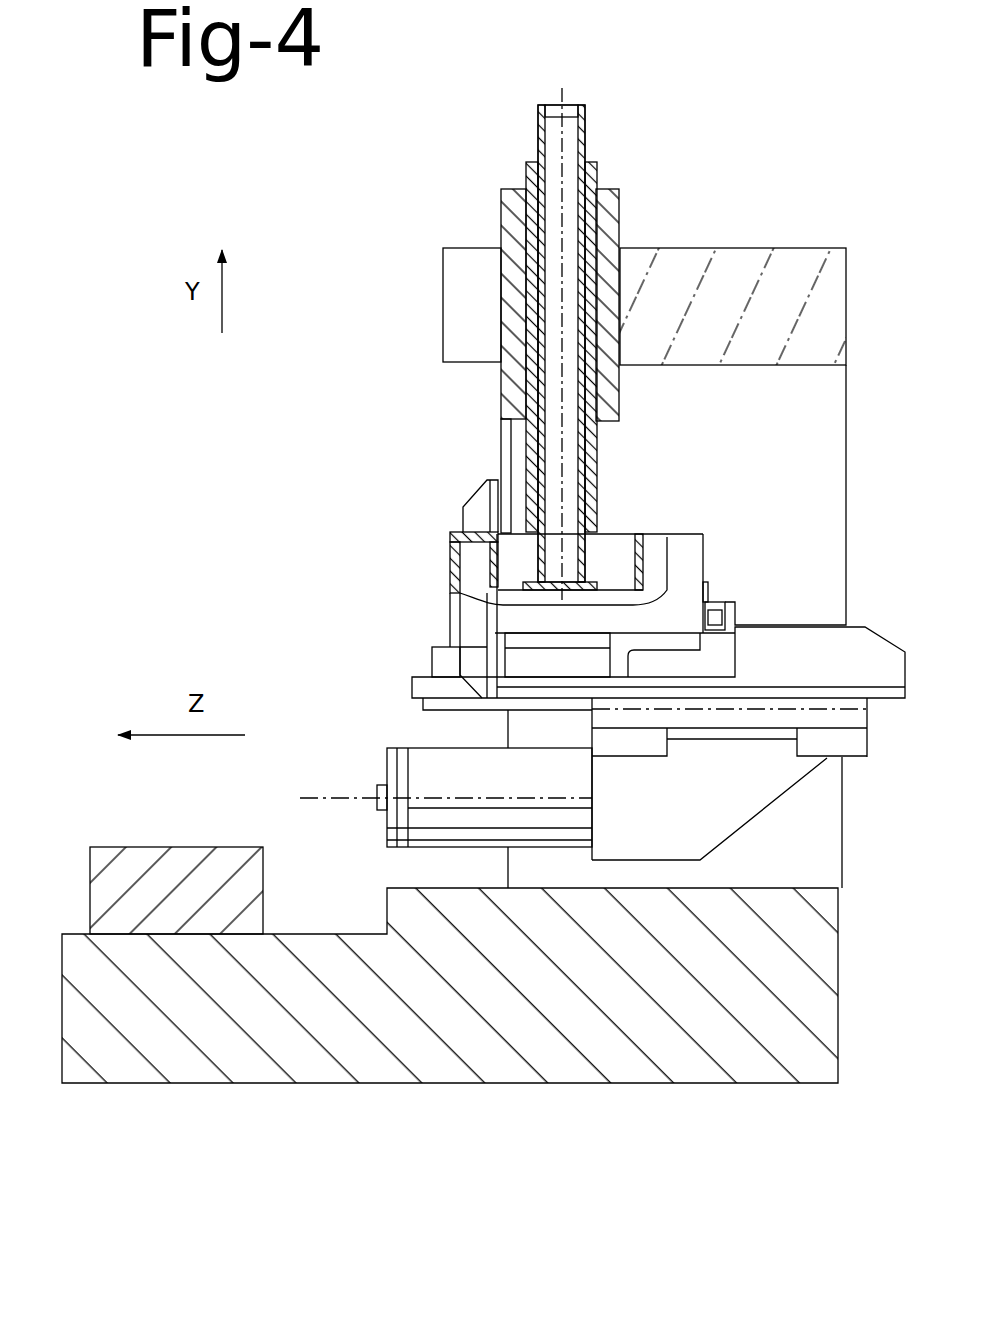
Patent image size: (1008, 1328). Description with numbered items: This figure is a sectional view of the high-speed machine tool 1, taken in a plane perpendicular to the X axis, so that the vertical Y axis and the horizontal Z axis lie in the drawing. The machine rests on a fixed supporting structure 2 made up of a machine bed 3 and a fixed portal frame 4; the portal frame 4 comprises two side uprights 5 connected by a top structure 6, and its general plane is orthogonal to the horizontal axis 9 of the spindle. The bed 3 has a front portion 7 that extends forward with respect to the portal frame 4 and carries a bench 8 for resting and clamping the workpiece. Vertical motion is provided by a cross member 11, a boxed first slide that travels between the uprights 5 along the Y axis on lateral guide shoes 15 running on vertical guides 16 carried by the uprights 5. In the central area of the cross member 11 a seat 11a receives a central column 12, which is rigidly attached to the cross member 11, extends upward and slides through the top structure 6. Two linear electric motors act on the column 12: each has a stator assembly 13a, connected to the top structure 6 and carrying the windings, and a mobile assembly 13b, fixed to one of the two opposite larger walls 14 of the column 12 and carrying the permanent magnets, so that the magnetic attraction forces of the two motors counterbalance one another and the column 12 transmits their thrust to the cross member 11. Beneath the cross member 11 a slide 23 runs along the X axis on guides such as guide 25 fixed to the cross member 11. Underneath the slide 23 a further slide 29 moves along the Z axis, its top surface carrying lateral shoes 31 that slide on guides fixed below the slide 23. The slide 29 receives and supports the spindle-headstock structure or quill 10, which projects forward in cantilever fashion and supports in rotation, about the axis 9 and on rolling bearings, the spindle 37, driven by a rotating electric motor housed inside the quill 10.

The high-speed machine tool 1 is at (396, 400).
The fixed supporting structure 2 is at (395, 1095).
The machine bed 3 is at (72, 924).
The fixed portal frame 4 is at (788, 243).
The side upright 5 is at (800, 487).
The top structure 6 is at (712, 268).
The front portion of the bed 7 is at (170, 1032).
The bench 8 is at (190, 848).
The horizontal axis of the spindle 9 is at (326, 805).
The spindle-headstock structure or quill 10 is at (412, 838).
The cross member 11 is at (662, 528).
The seat 11a is at (598, 578).
The central column 12 is at (588, 121).
The stator assembly 13a is at (510, 378).
The mobile assembly 13b is at (527, 176).
The larger wall of the central column 14 is at (562, 103).
The lateral guide shoe 15 is at (470, 516).
The vertical guide 16 is at (505, 440).
The slide 23 is at (404, 674).
The guide 25 is at (718, 607).
The further slide 29 is at (722, 805).
The lateral shoe 31 is at (797, 744).
The spindle 37 is at (377, 794).